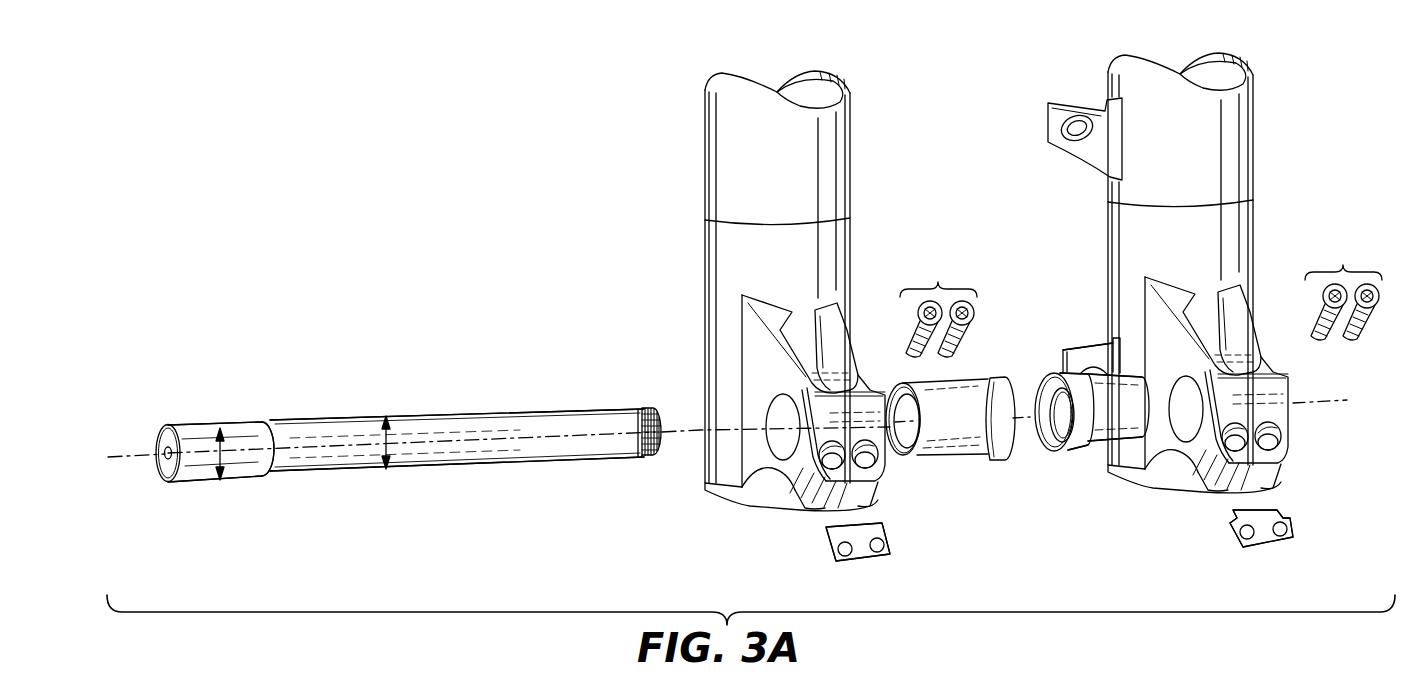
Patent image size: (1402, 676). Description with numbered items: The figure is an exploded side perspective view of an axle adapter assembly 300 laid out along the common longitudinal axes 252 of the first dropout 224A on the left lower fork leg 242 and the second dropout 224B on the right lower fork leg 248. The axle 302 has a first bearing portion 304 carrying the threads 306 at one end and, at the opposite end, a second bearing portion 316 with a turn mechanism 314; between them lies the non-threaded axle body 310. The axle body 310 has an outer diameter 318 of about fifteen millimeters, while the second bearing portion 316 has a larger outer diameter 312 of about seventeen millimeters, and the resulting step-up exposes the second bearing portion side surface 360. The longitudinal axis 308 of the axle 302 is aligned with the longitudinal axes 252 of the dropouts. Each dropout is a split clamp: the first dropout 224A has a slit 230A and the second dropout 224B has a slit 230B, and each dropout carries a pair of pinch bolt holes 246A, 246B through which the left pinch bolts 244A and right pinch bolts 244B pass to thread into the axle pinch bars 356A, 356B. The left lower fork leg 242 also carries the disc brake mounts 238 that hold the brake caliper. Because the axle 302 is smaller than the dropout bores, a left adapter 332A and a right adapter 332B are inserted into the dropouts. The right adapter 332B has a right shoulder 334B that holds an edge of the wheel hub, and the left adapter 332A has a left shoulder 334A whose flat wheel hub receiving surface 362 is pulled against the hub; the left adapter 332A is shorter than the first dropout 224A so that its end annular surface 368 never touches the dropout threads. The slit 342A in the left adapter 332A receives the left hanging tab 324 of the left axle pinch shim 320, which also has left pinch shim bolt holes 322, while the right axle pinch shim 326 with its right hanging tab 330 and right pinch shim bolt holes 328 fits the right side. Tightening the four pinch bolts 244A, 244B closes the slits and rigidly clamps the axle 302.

The handlebar assembly 300 is at (262, 270).
The axle 302 is at (334, 402).
The first bearing portion 304 is at (662, 375).
The threads 306 is at (654, 458).
The longitudinal axis 308 is at (500, 440).
The axle body 310 is at (458, 468).
The outer diameter 312 is at (225, 443).
The turn mechanism 314 is at (158, 445).
The second bearing portion 316 is at (275, 388).
The outer diameter 318 is at (389, 432).
The second bearing portion side surface 360 is at (276, 476).
The longitudinal axes 252 is at (698, 431).
The right lower fork leg 248 is at (705, 181).
The left lower fork leg 242 is at (1252, 143).
The first dropout 224A is at (1283, 387).
The second dropout 224B is at (777, 415).
The left pinch bolt holes 246A is at (1283, 437).
The right pinch bolt holes 246B is at (878, 458).
The slit 230A is at (1190, 475).
The slit 230B is at (790, 488).
The axle pinch bar 356A is at (1262, 492).
The axle pinch bar 356B is at (880, 516).
The left M5 pinch bolts 244A is at (1343, 290).
The right M5 pinch bolts 244B is at (938, 308).
The right hanging tab 330 is at (816, 530).
The right pinch shim bolt holes 328 is at (884, 545).
The right axle pinch shim 326 is at (860, 561).
The left adapter 332A is at (1071, 458).
The right adapter 332B is at (956, 456).
The left shoulder 334A is at (1077, 336).
The right shoulder 334B is at (1015, 377).
The slit 342A is at (1073, 445).
The wheel hub receiving surface 362 is at (1045, 446).
The disc brake mounts 238 is at (1095, 167).
The end annular surface 368 is at (1150, 365).
The left hanging tab 324 is at (1296, 510).
The left pinch shim bolt holes 322 is at (1293, 533).
The left axle pinch shim 320 is at (1267, 547).